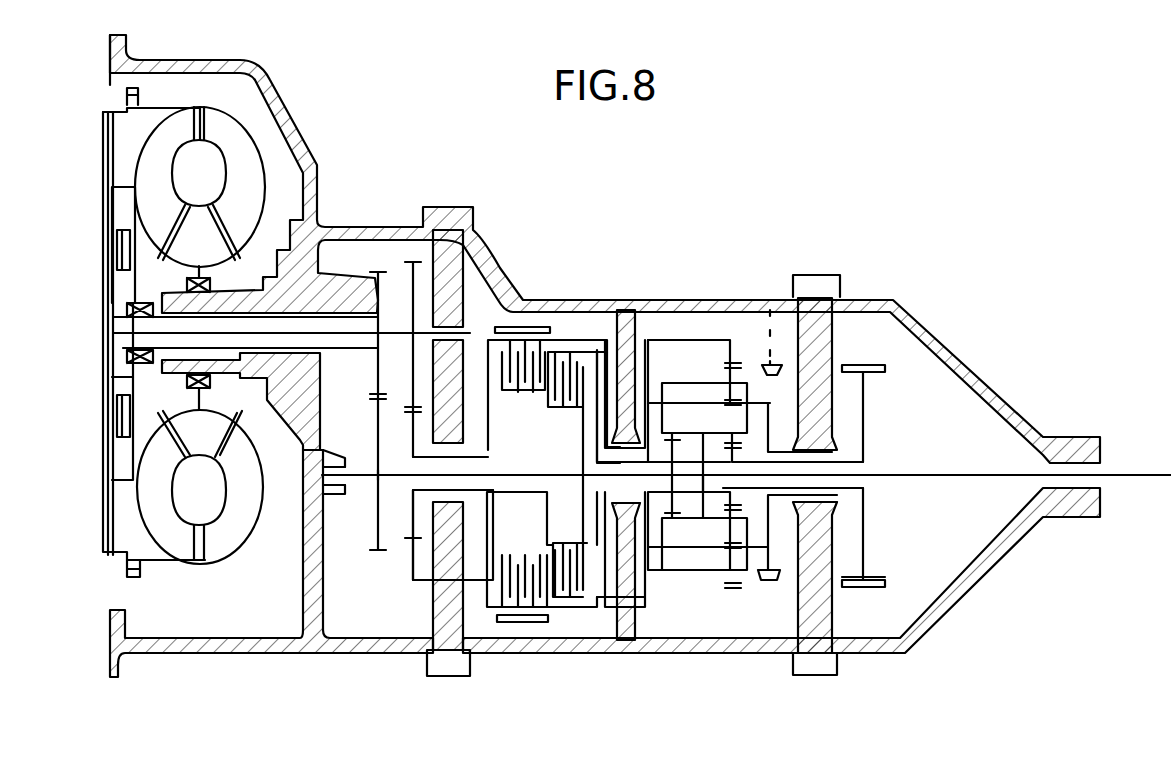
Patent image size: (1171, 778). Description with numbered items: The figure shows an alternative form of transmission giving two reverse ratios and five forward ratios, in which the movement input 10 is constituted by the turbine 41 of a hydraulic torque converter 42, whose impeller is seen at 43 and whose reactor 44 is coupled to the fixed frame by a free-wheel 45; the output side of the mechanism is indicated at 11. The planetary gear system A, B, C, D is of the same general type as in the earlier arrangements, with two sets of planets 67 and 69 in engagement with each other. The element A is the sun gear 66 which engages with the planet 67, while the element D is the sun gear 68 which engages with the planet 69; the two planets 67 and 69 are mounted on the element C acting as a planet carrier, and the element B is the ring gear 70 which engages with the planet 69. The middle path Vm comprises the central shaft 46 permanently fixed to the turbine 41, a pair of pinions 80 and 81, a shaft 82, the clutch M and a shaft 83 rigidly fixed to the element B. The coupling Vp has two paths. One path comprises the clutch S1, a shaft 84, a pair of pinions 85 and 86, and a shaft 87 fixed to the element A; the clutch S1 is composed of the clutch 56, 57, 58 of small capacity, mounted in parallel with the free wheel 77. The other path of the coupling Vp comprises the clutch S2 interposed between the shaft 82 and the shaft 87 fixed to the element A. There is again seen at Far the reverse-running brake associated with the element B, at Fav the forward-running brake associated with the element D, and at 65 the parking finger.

The movement input 10 is at (133, 150).
The output shaft axis 11 is at (1137, 475).
The turbine 41 is at (168, 194).
The hydraulic torque converter 42 is at (267, 131).
The impeller 43 is at (258, 194).
The reactor 44 is at (212, 247).
The free-wheel 45 is at (199, 410).
The central shaft 46 is at (327, 333).
The clutch 56 is at (118, 388).
The clutch 57 is at (118, 445).
The clutch 58 is at (117, 415).
The parking finger 65 is at (770, 320).
The sun gear 66 is at (680, 452).
The planet 67 is at (680, 382).
The sun gear 68 is at (760, 450).
The planet 69 is at (740, 372).
The ring gear 70 is at (678, 340).
The free wheel 77 is at (127, 305).
The pinion 80 is at (410, 278).
The pinion 81 is at (410, 527).
The shaft 82 is at (512, 495).
The shaft 83 is at (640, 440).
The shaft 84 is at (287, 308).
The pinion 85 is at (378, 285).
The pinion 86 is at (380, 410).
The shaft 87 is at (395, 478).
The clutch S1 is at (117, 247).
The clutch S2 is at (565, 408).
The clutch M is at (518, 395).
The element A is at (690, 505).
The element B is at (663, 340).
The element C is at (773, 430).
The element D is at (738, 495).
The coupling Vp is at (362, 487).
The middle path Vm is at (586, 333).
The reverse-running brake Far is at (545, 327).
The forward-running brake Fav is at (863, 365).